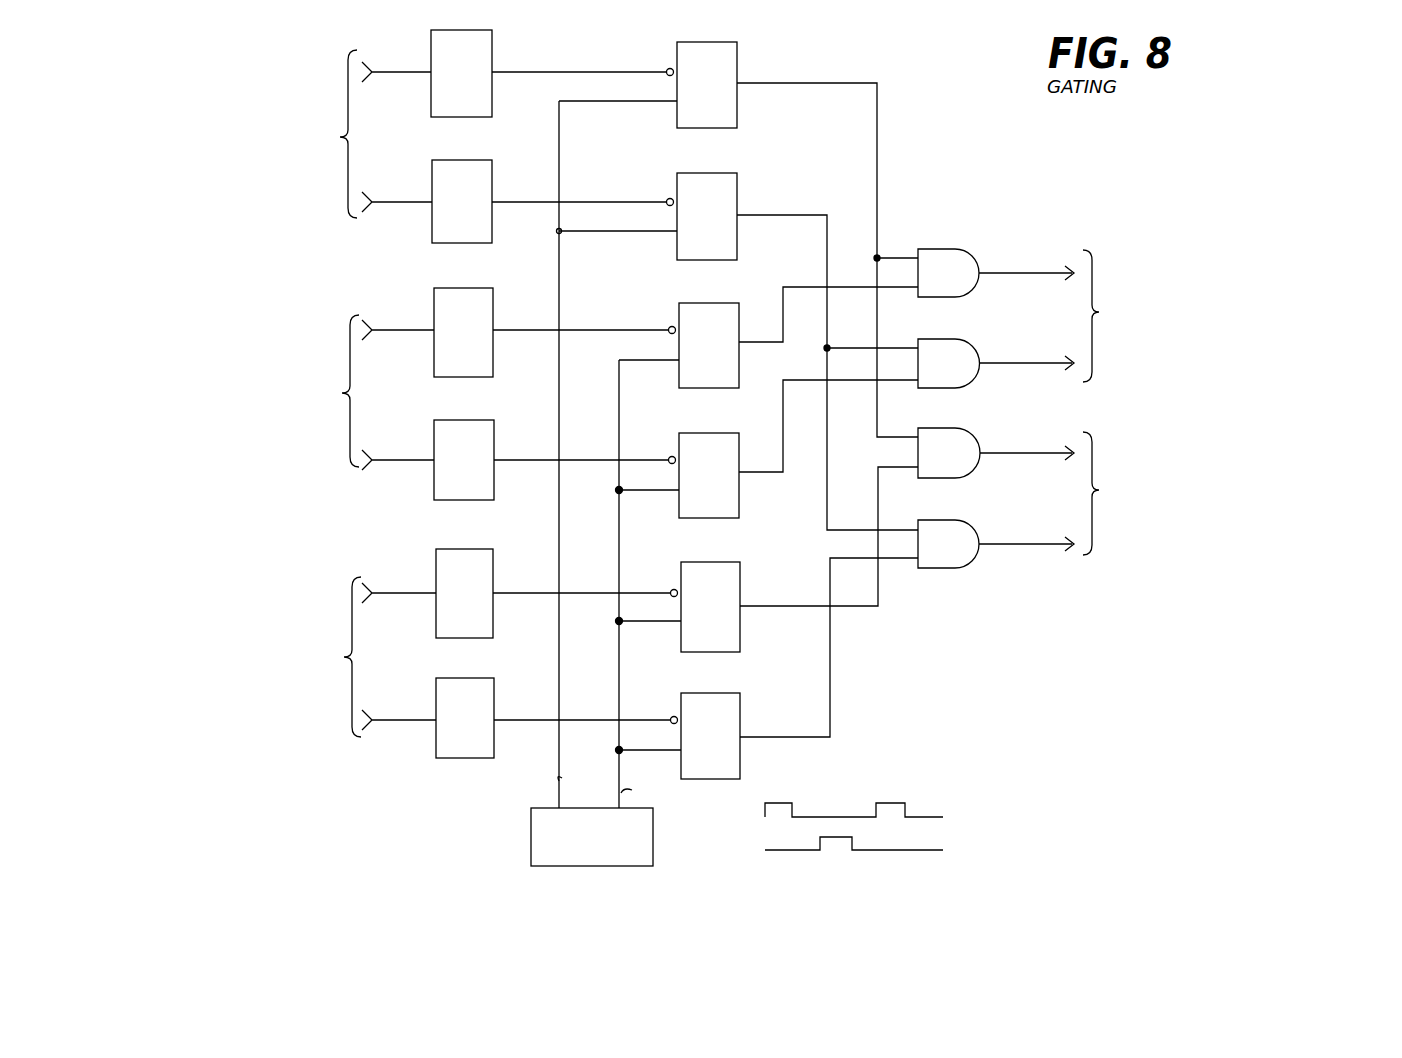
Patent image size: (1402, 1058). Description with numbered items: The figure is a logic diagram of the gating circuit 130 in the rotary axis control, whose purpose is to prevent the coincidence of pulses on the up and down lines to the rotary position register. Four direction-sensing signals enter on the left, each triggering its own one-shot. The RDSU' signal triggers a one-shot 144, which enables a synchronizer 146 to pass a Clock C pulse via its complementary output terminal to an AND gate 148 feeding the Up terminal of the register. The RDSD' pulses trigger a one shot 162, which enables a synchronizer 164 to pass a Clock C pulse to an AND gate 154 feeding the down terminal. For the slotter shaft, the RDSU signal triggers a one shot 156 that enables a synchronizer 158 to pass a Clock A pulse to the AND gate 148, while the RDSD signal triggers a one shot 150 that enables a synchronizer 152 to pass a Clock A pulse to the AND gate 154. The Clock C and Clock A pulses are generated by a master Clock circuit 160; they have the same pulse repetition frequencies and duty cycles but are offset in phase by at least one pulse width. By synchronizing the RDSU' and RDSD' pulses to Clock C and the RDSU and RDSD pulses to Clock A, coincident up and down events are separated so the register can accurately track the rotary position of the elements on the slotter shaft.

The gating circuit 130 is at (997, 160).
The one-shot 144 is at (488, 44).
The synchronizer 146 is at (727, 50).
The one shot 162 is at (462, 166).
The synchronizer 164 is at (727, 186).
The one shot 156 is at (460, 304).
The synchronizer 158 is at (727, 298).
The one shot 150 is at (478, 430).
The synchronizer 152 is at (718, 432).
The AND gate 148 is at (930, 257).
The AND gate 154 is at (940, 346).
The master Clock circuit 160 is at (646, 857).